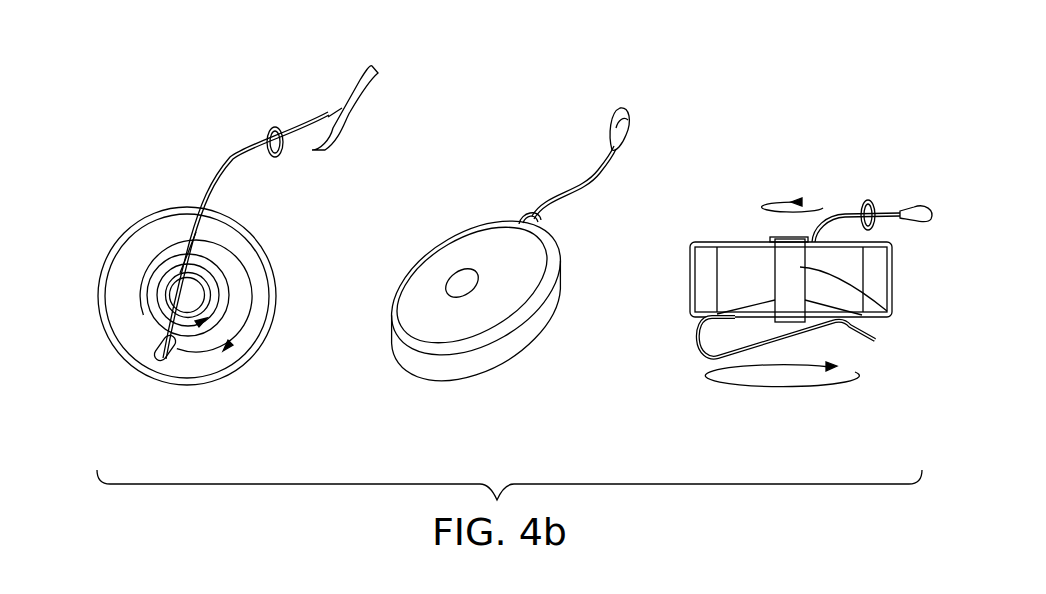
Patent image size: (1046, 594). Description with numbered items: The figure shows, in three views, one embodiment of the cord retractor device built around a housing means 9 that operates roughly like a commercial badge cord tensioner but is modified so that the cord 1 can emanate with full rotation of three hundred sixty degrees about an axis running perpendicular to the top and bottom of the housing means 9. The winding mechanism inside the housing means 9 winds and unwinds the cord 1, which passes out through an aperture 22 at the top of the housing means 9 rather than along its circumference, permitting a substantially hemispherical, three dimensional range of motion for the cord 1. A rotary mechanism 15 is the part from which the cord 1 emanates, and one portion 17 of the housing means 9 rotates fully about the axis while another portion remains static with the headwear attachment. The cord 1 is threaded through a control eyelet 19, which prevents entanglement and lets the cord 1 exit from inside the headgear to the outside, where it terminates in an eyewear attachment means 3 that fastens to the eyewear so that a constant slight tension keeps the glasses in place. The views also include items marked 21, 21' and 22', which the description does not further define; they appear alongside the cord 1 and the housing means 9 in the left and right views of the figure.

The cord 1 is at (232, 158).
The eyewear attachment means 3 is at (330, 108).
The housing means 9 is at (185, 396).
The rotary mechanism 15 is at (198, 280).
The rotating portion of housing 17 is at (262, 292).
The control eyelet 19 is at (272, 128).
The spring 21 is at (507, 346).
The rotation direction 21' is at (509, 280).
The aperture 22 is at (132, 365).
The cord anchor point 22' is at (145, 229).